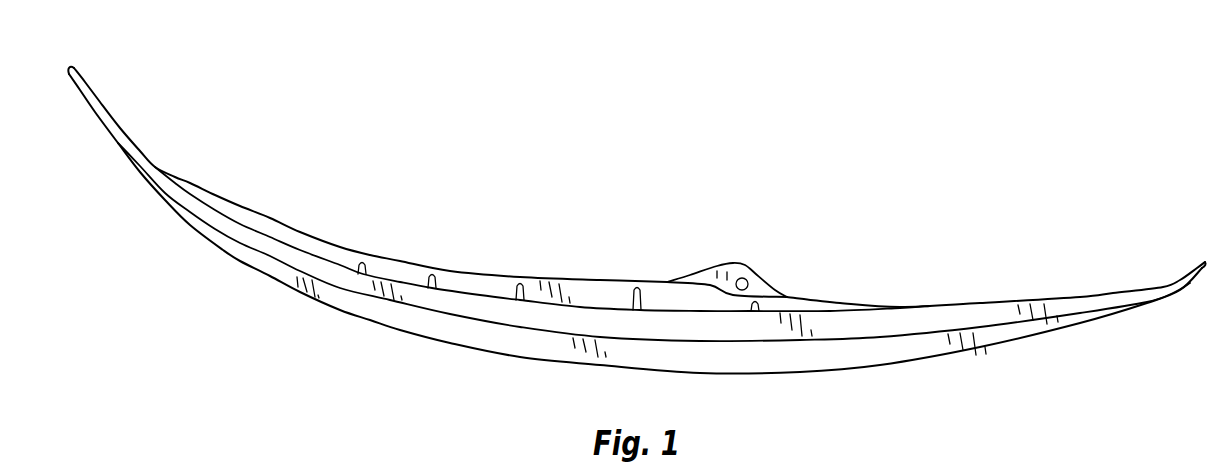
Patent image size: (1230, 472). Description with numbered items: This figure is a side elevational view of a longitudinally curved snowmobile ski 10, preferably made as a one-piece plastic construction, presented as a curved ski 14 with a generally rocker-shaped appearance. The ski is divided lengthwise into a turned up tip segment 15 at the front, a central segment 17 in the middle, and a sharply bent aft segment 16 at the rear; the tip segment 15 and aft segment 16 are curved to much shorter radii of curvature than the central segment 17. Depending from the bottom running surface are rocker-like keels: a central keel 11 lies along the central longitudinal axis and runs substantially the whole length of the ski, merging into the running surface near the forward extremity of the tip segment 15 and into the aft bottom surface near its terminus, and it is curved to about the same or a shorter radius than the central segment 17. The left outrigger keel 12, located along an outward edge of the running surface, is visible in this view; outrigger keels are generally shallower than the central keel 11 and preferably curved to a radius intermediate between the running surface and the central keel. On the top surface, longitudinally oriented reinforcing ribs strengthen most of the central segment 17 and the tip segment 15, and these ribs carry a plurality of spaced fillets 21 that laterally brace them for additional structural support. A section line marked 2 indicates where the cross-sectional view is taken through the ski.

The snowmobile ski 10 is at (888, 276).
The central keel 11 is at (440, 327).
The outrigger keel 12 is at (962, 314).
The curved ski 14 is at (612, 310).
The tip segment 15 is at (125, 58).
The aft segment 16 is at (1195, 263).
The central segment 17 is at (1070, 222).
The fillets 21 is at (440, 277).
The section line 2- 2 is at (740, 253).